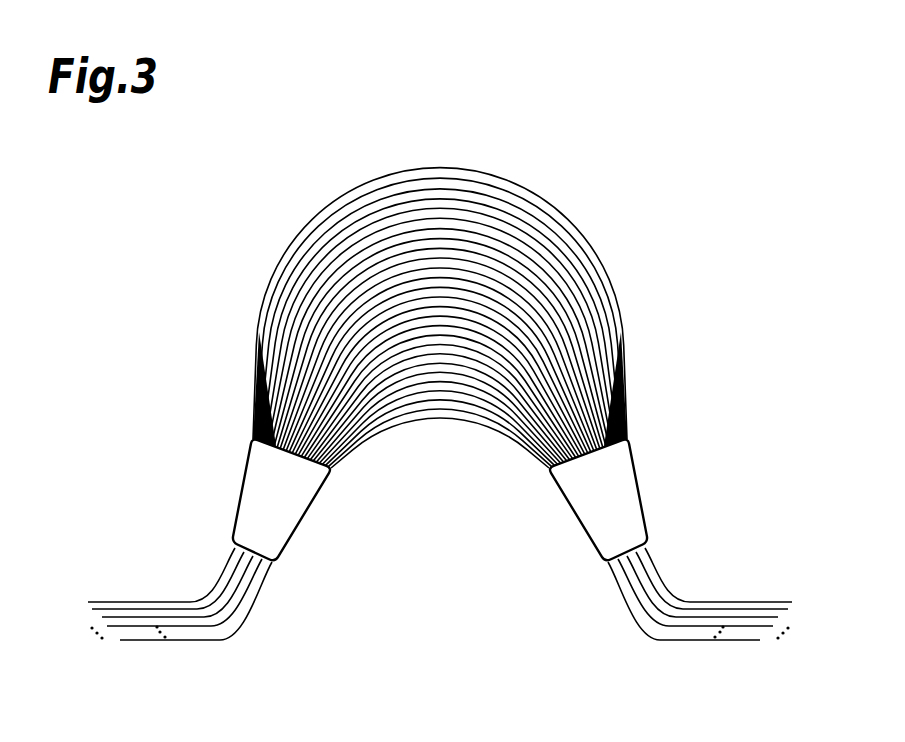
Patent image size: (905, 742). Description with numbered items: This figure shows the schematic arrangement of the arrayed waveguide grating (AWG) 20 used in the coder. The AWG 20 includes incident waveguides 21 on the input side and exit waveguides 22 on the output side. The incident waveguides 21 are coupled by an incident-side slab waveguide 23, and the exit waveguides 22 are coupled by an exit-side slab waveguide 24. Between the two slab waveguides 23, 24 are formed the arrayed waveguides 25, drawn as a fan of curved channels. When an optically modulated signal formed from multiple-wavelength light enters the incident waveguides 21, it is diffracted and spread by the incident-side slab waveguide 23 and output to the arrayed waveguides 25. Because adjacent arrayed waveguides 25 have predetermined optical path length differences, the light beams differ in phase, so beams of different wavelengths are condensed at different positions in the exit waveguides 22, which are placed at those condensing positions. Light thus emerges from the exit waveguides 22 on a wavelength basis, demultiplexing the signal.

The arrayed waveguide grating 20 is at (562, 95).
The incident waveguides 21 is at (150, 600).
The exit waveguides 22 is at (730, 600).
The incident-side slab waveguide 23 is at (258, 486).
The exit-side slab waveguide 24 is at (622, 486).
The arrayed waveguides 25 is at (550, 194).